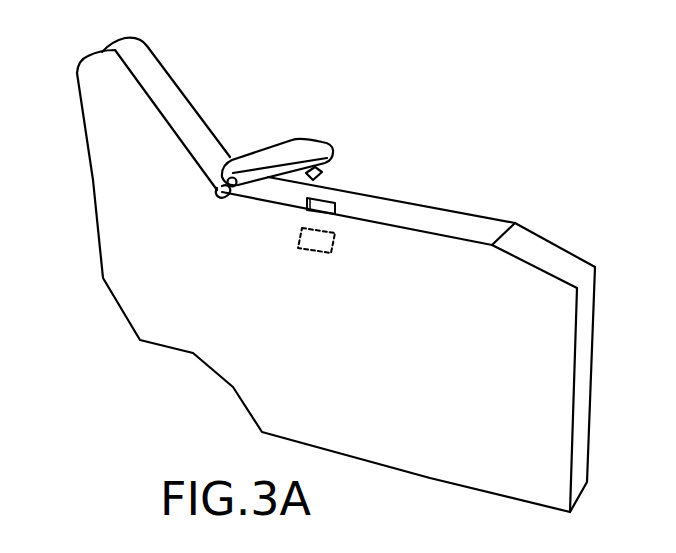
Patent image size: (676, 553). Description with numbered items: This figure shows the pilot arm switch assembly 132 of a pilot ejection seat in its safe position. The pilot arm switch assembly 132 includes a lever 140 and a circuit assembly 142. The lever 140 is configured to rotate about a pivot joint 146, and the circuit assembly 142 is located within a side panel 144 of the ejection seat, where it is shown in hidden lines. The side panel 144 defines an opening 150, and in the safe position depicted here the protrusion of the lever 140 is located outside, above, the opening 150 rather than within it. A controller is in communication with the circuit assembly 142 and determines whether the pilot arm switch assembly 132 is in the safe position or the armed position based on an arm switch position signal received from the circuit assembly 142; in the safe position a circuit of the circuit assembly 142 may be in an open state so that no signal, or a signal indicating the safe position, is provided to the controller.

The pilot arm switch assembly 132 is at (237, 90).
The lever 140 is at (298, 139).
The circuit assembly 142 is at (320, 248).
The side panel 144 is at (399, 393).
The pivot joint 146 is at (221, 194).
The opening 150 is at (358, 176).